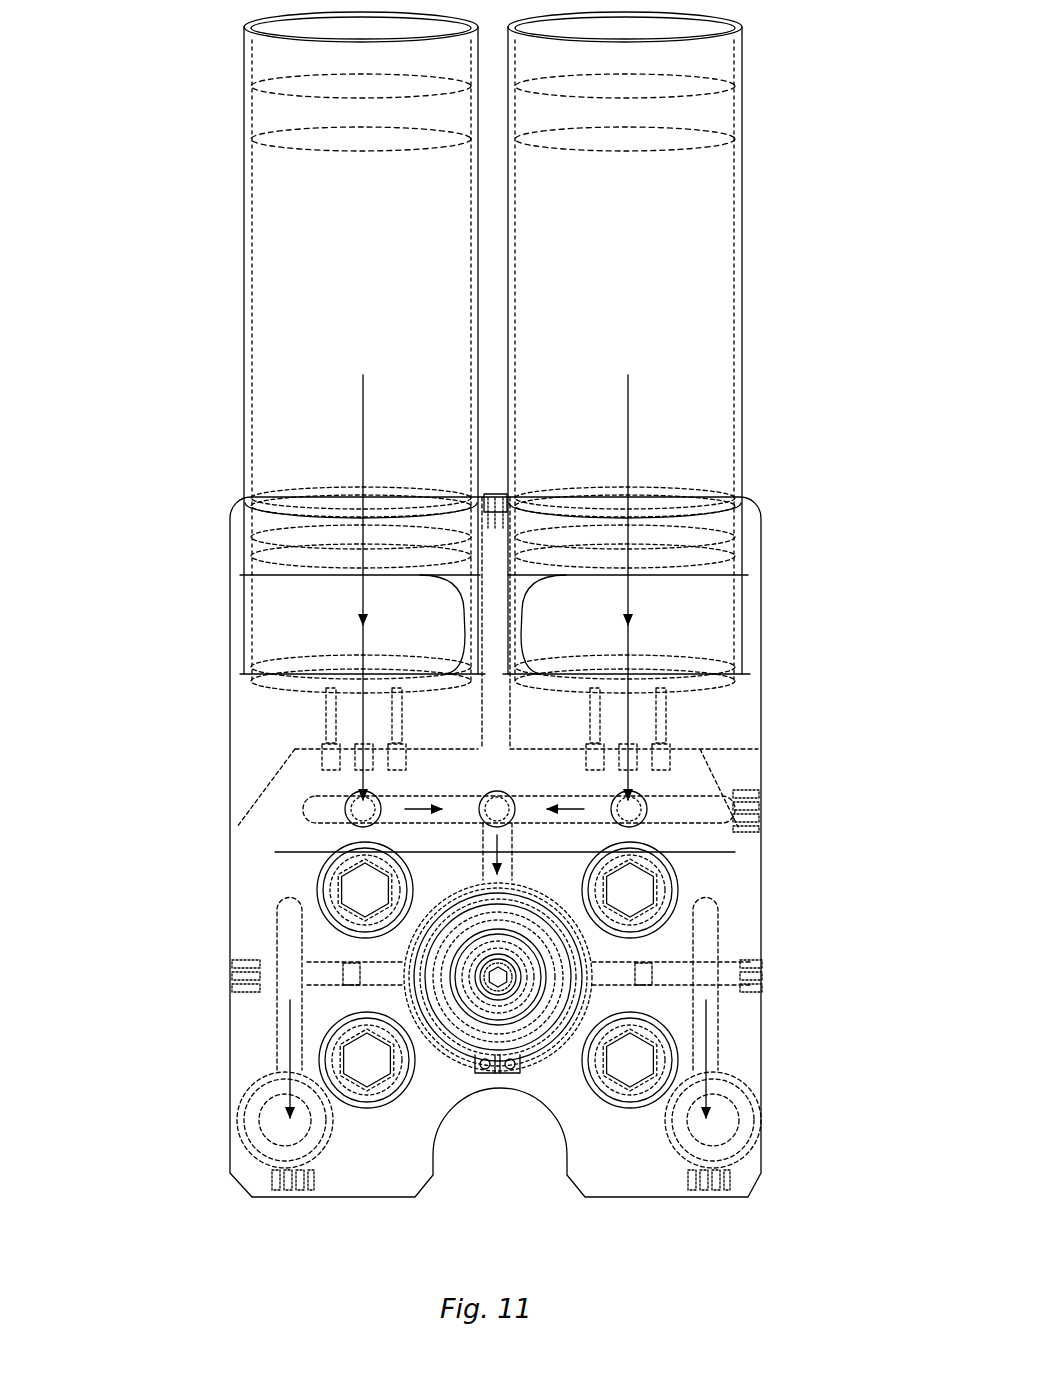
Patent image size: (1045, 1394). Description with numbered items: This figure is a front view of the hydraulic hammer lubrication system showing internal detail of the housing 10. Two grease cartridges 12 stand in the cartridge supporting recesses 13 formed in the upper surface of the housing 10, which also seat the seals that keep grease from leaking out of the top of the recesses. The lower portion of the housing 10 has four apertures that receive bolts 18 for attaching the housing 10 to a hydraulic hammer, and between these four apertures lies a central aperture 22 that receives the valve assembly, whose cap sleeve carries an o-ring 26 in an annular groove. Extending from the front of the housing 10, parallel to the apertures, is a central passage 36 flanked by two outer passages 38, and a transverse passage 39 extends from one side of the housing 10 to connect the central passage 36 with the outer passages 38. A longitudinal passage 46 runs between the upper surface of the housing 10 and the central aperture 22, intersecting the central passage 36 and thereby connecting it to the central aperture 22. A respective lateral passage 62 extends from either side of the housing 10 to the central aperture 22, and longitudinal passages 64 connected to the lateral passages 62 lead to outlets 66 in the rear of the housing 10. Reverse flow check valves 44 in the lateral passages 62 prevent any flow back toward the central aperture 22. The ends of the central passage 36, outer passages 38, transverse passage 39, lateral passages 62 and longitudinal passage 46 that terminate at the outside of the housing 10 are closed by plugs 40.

The housing 10 is at (195, 595).
The grease cartridges 12 is at (245, 262).
The cartridge supporting recesses 13 is at (290, 588).
The bolts 18 is at (367, 1075).
The central aperture 22 is at (400, 963).
The o-ring 26 is at (487, 1075).
The central passage 36 is at (480, 800).
The outer passages 38 is at (358, 807).
The transverse passage 39 is at (697, 800).
The plugs 40 is at (760, 793).
The reverse flow check valves 44 is at (340, 974).
The longitudinal passage 46 is at (497, 623).
The lateral passages 62 is at (313, 980).
The longitudinal passages 64 is at (287, 1032).
The outlets 66 is at (275, 1128).